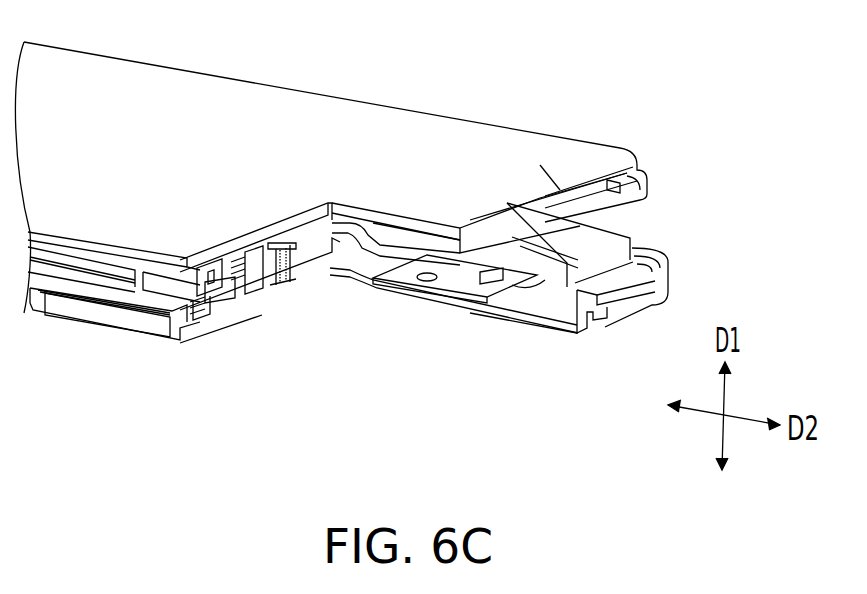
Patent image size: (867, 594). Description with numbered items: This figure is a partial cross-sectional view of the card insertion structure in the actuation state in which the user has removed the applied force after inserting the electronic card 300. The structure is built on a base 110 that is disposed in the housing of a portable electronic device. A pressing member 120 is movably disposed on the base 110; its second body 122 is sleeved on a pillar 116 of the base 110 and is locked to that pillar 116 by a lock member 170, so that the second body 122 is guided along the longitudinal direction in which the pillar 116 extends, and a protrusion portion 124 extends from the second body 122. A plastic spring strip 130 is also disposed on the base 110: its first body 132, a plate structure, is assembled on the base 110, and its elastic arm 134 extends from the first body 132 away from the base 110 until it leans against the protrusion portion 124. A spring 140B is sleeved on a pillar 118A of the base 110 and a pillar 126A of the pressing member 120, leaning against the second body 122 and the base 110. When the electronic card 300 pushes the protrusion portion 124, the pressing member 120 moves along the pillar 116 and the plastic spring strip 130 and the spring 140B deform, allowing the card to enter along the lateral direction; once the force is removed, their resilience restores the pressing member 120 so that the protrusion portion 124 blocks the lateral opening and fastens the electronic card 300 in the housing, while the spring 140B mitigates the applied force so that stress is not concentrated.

The base 110 is at (153, 337).
The pillar 116 is at (308, 268).
The pillar 118A is at (243, 293).
The pressing member 120 is at (652, 78).
The second body 122 is at (537, 160).
The protrusion portion 124 is at (633, 165).
The pillar 126A is at (220, 265).
The plastic spring strip 130 is at (538, 378).
The first body 132 is at (460, 287).
The elastic arm 134 is at (508, 288).
The spring 140B is at (193, 320).
The lock member 170 is at (279, 247).
The electronic card 300 is at (258, 113).